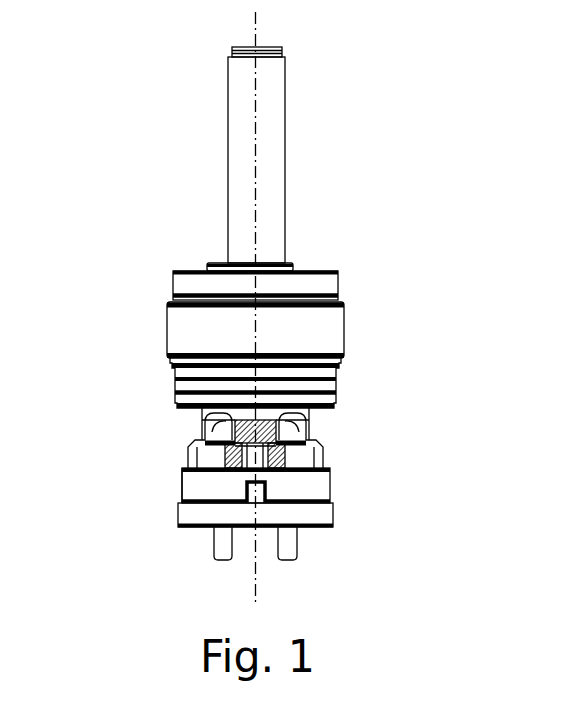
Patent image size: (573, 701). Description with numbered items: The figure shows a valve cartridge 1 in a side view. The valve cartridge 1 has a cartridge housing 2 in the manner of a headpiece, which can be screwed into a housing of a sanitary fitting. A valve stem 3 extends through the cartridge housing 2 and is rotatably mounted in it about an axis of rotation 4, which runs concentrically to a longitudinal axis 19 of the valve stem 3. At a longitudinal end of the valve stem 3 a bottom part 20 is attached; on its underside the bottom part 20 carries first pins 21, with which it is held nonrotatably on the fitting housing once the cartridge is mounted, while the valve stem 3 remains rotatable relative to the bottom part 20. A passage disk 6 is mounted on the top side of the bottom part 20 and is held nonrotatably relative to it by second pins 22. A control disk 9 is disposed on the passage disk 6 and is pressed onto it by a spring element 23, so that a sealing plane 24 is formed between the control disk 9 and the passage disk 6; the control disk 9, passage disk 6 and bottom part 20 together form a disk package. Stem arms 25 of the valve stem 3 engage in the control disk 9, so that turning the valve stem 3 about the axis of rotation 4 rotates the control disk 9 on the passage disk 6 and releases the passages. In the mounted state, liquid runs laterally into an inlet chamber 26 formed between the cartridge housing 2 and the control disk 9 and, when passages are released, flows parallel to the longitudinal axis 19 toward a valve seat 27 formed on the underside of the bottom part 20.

The valve cartridge 1 is at (414, 147).
The cartridge housing 2 is at (338, 282).
The valve stem 3 is at (285, 171).
The axis of rotation 4 is at (258, 17).
The passage disk 6 is at (330, 484).
The control disk 9 is at (320, 448).
The longitudinal axis 19 is at (250, 43).
The bottom part 20 is at (333, 510).
The first pins 21 is at (300, 548).
The second pins 22 is at (245, 483).
The spring element 23 is at (322, 418).
The sealing plane 24 is at (182, 477).
The stem arms 25 is at (203, 433).
The inlet chamber 26 is at (203, 410).
The valve seat 27 is at (207, 530).